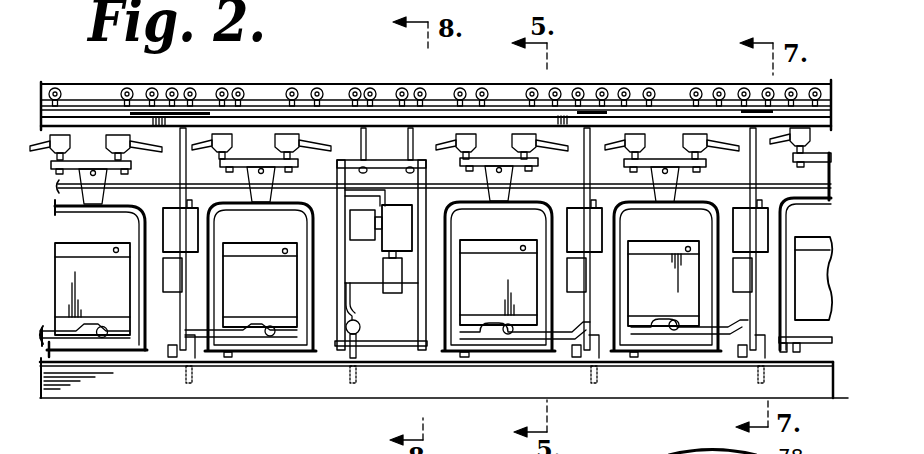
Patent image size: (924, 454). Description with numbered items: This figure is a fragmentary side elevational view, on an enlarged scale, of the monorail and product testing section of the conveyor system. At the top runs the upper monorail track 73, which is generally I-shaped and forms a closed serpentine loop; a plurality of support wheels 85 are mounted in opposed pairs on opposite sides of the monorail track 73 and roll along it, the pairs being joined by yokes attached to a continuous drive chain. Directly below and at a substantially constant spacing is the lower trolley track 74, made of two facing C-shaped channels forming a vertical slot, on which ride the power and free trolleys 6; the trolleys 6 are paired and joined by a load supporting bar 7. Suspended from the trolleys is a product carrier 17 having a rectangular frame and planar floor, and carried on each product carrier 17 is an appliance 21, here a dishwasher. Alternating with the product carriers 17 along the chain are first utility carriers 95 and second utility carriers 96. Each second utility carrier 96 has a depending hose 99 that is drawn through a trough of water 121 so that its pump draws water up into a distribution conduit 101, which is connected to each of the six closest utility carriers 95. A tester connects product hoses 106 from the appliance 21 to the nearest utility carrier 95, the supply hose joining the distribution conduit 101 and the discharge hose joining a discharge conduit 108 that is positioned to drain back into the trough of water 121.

The upper monorail track 73 is at (338, 90).
The support wheels 85 is at (401, 95).
The lower trolley track 74 is at (818, 120).
The power and free trolleys 6 is at (103, 145).
The load supporting bar 7 is at (247, 143).
The distribution conduit 101 is at (161, 187).
The product carrier 17 is at (308, 225).
The appliance 21 is at (243, 243).
The product hoses 106 is at (46, 337).
The first utility carrier 95 is at (176, 325).
The second utility carrier 96 is at (421, 310).
The hose 99 is at (360, 365).
The discharge conduit 108 is at (199, 358).
The water 121 is at (465, 393).